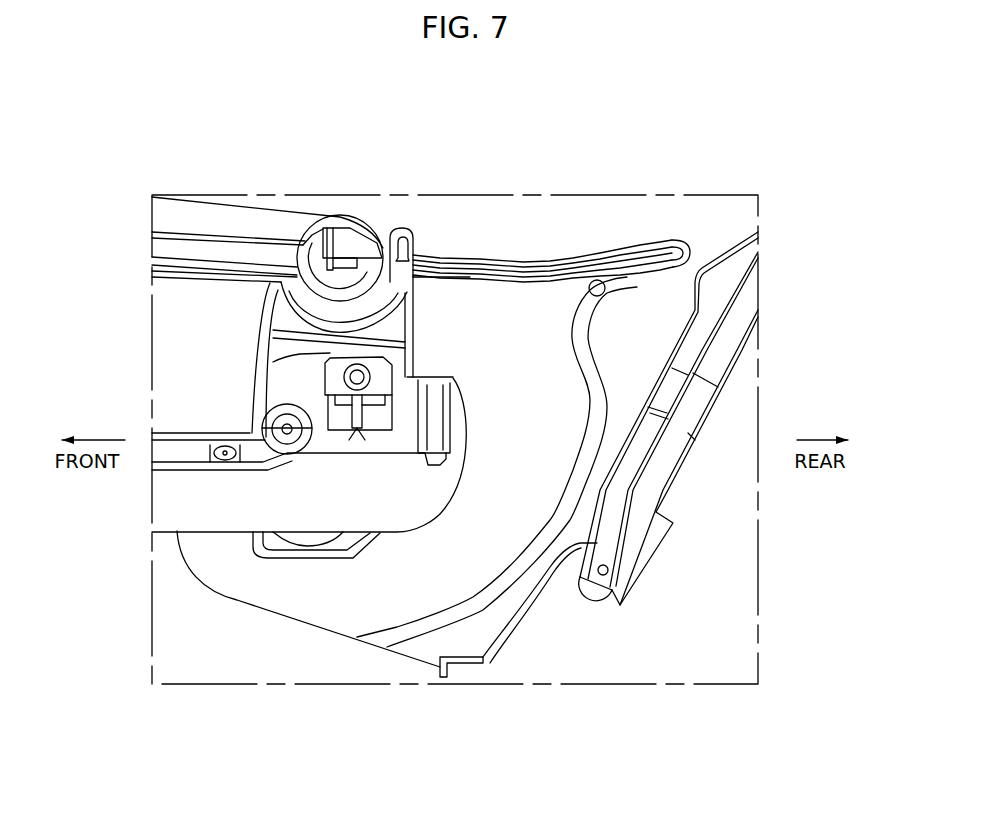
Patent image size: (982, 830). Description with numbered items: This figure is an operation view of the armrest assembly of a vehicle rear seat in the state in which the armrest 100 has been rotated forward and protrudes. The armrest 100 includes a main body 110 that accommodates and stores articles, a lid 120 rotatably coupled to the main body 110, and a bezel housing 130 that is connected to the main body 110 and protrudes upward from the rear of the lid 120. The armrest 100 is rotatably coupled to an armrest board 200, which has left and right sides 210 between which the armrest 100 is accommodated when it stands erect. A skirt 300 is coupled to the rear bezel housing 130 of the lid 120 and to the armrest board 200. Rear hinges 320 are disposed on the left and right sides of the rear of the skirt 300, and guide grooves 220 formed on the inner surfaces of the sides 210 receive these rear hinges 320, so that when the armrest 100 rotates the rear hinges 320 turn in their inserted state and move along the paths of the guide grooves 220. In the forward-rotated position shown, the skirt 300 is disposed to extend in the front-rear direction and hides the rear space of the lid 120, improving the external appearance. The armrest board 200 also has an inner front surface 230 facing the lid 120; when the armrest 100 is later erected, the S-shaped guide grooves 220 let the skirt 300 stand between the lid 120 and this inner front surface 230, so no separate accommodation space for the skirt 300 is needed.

The armrest 100 is at (150, 366).
The main body 110 is at (187, 393).
The lid 120 is at (188, 213).
The bezel housing 130 is at (407, 313).
The armrest board 200 is at (720, 193).
The sides 210 is at (493, 527).
The guide grooves 220 is at (583, 467).
The inner front surface 230 is at (657, 362).
The skirt 300 is at (527, 272).
The rear hinges 320 is at (598, 279).